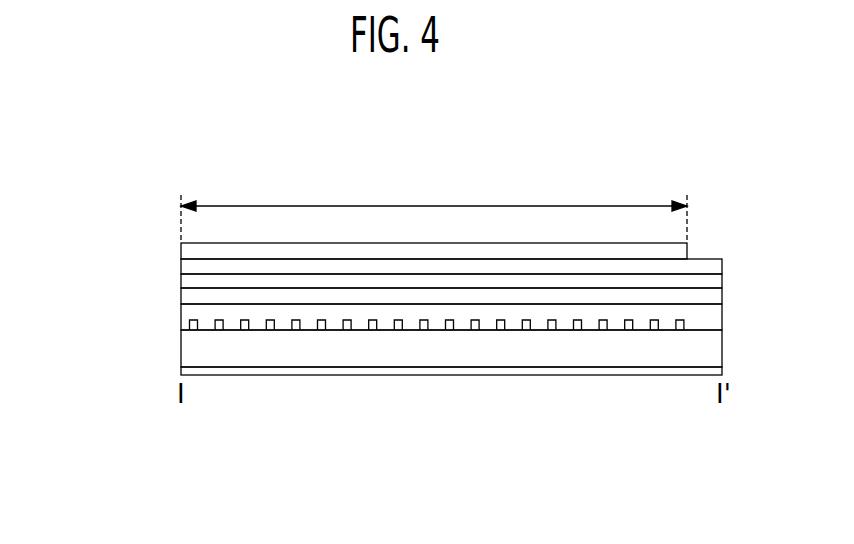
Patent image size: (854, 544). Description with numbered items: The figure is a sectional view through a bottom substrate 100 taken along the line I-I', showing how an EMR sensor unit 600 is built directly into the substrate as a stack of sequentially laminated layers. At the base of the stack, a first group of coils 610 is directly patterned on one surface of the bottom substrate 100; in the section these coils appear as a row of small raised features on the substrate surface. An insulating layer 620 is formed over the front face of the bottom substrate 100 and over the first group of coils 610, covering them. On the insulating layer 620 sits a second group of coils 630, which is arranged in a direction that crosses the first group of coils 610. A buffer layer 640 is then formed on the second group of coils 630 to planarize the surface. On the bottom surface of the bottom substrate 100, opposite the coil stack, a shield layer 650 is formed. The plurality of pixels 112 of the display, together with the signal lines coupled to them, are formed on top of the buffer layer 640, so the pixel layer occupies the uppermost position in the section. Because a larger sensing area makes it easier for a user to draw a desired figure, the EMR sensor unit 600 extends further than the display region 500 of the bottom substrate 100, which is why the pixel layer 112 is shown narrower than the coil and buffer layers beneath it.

The display region 500 is at (434, 210).
The pixels 112 is at (181, 246).
The EMR sensor unit 600 is at (97, 248).
The buffer layer 640 is at (181, 263).
The second group of coils 630 is at (181, 280).
The insulating layer 620 is at (181, 297).
The first group of coils 610 is at (181, 322).
The bottom substrate 100 is at (537, 355).
The shield layer 650 is at (664, 375).